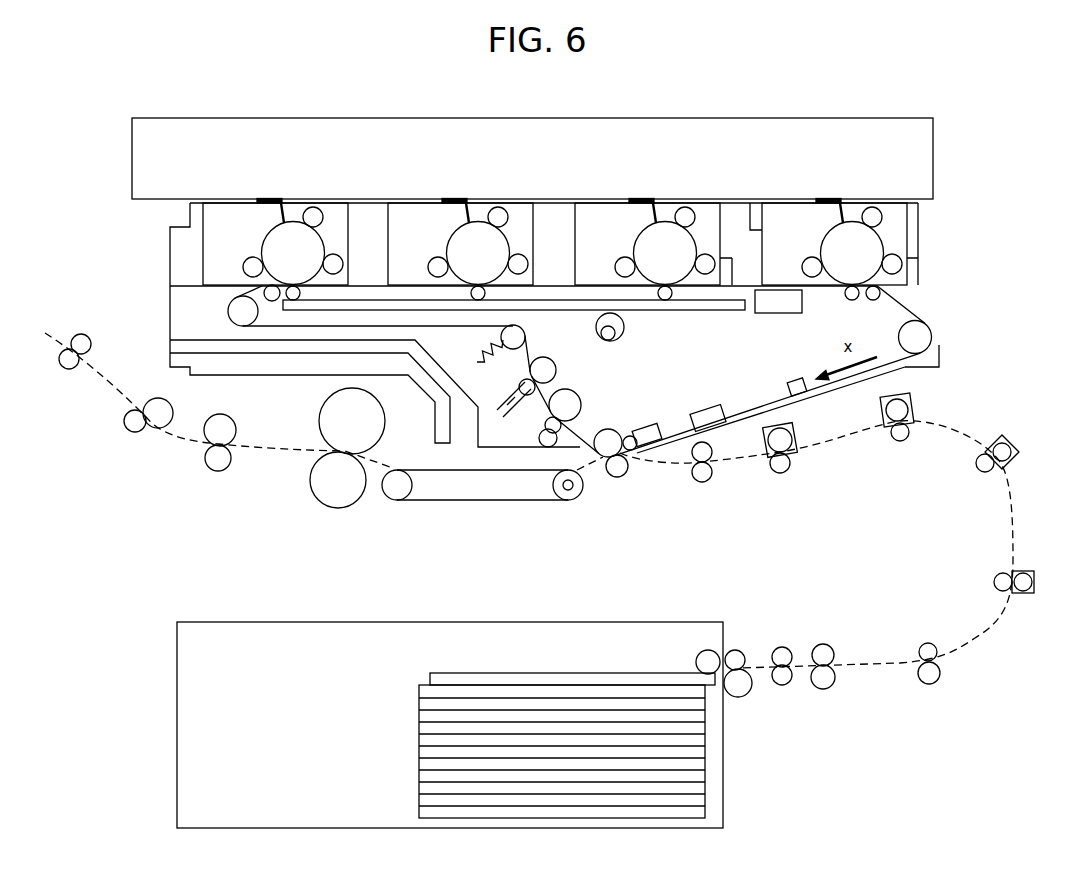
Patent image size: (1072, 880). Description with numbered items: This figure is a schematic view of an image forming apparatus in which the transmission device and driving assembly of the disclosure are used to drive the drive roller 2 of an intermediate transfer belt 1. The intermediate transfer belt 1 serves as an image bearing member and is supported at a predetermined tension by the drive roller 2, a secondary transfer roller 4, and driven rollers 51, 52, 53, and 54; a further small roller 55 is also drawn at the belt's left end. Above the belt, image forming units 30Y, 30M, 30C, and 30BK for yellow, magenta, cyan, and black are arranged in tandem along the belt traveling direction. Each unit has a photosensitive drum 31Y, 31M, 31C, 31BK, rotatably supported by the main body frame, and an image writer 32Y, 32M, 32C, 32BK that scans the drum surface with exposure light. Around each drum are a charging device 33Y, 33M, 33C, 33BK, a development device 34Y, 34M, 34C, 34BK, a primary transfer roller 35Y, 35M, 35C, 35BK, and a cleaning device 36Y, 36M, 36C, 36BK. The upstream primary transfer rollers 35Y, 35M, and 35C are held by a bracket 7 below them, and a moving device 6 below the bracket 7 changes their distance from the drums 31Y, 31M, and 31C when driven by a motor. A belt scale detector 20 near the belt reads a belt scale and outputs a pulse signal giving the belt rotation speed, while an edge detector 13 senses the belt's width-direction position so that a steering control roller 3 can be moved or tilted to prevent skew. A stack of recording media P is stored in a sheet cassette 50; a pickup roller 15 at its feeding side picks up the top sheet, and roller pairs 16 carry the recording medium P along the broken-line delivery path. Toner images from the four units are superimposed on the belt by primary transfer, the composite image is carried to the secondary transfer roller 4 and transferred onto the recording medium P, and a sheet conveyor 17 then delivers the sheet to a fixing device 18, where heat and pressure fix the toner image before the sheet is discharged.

The image forming unit 30Y is at (294, 181).
The image forming unit 30M is at (479, 181).
The image forming unit 30C is at (666, 181).
The image forming unit 30BK is at (853, 181).
The photosensitive drum 31Y is at (277, 243).
The photosensitive drum 31M is at (462, 243).
The photosensitive drum 31C is at (649, 243).
The photosensitive drum 31BK is at (836, 243).
The image writer 32Y is at (287, 196).
The image writer 32M is at (472, 196).
The image writer 32C is at (659, 196).
The image writer 32BK is at (846, 196).
The charging device 33Y is at (314, 207).
The charging device 33M is at (499, 207).
The charging device 33C is at (686, 207).
The charging device 33BK is at (873, 207).
The development device 34Y is at (250, 266).
The development device 34M is at (435, 266).
The development device 34C is at (622, 266).
The development device 34BK is at (809, 266).
The primary transfer roller 35Y is at (293, 301).
The primary transfer roller 35M is at (478, 301).
The primary transfer roller 35C is at (665, 301).
The primary transfer roller 35BK is at (852, 301).
The cleaning device 36Y is at (331, 255).
The cleaning device 36M is at (516, 255).
The cleaning device 36C is at (703, 255).
The cleaning device 36BK is at (890, 255).
The intermediate transfer belt 1 is at (907, 304).
The drive roller 2 is at (933, 337).
The steering control roller 3 is at (230, 311).
The secondary transfer roller 4 is at (619, 478).
The moving device 6 is at (623, 332).
The bracket 7 is at (729, 312).
The edge detector 13 is at (789, 389).
The pickup roller 15 is at (704, 650).
The roller pairs 16 is at (930, 684).
The sheet conveyor 17 is at (472, 501).
The fixing device 18 is at (312, 487).
The belt scale detector 20 is at (779, 314).
The sheet cassette 50 is at (346, 628).
The driven roller 51 is at (874, 301).
The driven roller 52 is at (581, 404).
The driven roller 53 is at (556, 369).
The driven roller 54 is at (526, 336).
The support roller 55 is at (264, 289).
The recording medium P is at (706, 750).